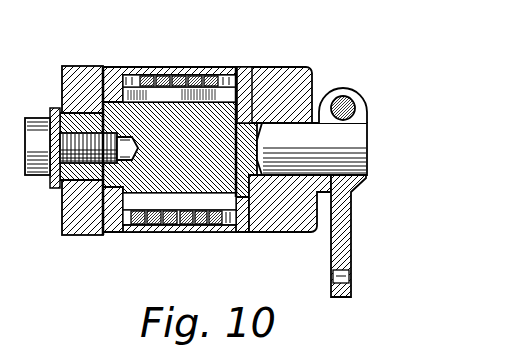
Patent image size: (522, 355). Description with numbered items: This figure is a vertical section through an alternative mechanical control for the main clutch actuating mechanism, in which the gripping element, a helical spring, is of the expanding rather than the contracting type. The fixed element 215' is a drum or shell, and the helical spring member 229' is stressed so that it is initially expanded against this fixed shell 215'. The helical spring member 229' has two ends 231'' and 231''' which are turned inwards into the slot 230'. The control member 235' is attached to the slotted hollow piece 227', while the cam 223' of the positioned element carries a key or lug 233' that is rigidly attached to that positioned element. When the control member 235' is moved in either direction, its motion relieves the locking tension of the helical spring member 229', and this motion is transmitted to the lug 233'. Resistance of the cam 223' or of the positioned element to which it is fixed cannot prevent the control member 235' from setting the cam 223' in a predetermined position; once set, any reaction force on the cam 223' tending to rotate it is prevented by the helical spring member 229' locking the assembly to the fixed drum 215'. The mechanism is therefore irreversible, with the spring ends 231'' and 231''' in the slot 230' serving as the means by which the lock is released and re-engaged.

The cam 223' is at (70, 127).
The end of helical spring member 231''' is at (167, 60).
The key or lug 233' is at (179, 50).
The fixed element 215' is at (158, 112).
The end of helical spring member 231'' is at (265, 77).
The slot 230' is at (296, 78).
The slotted hollow piece 227' is at (170, 235).
The helical spring member 229' is at (198, 245).
The control member 235' is at (378, 239).